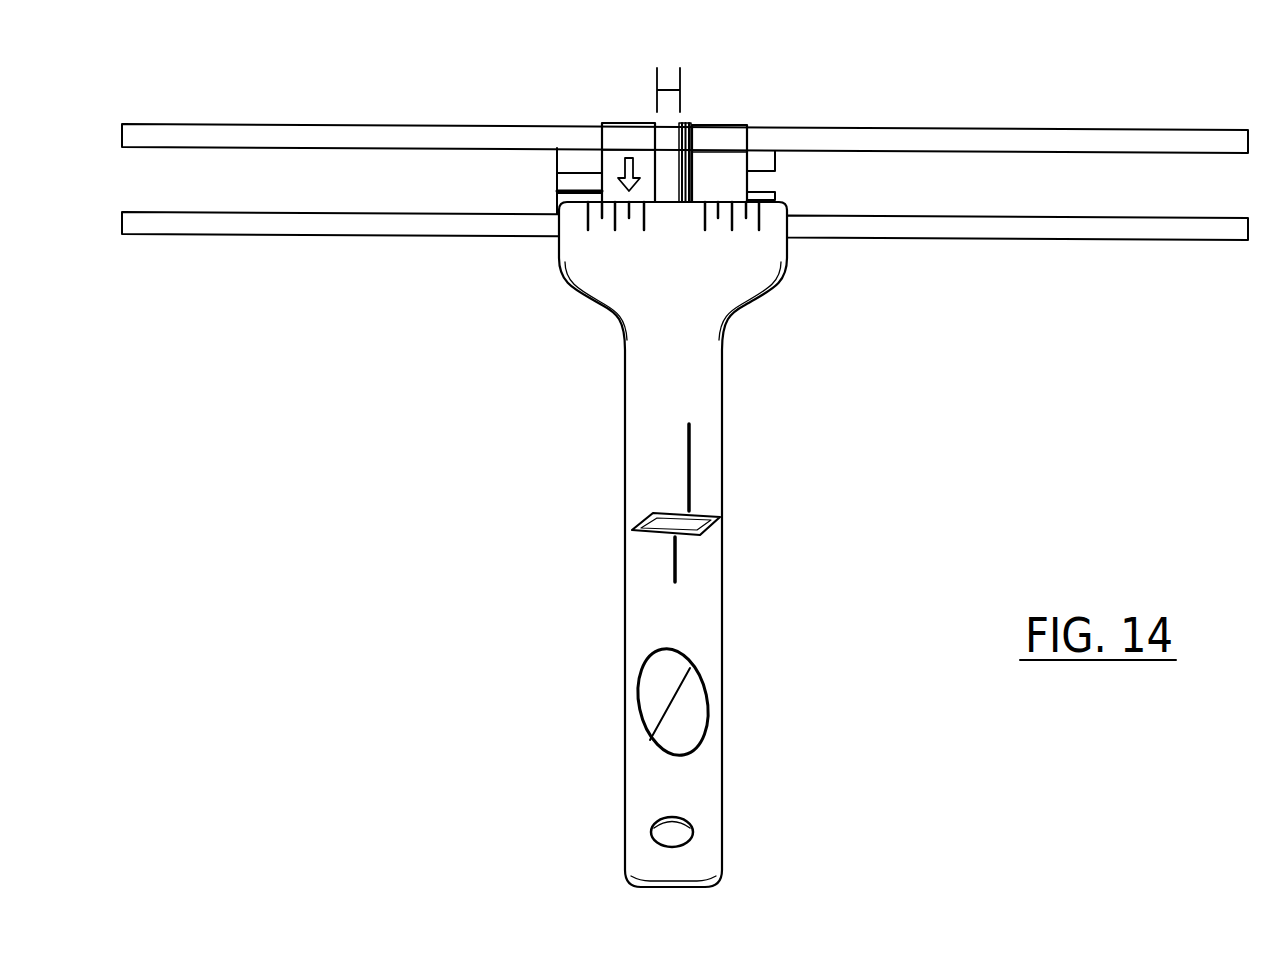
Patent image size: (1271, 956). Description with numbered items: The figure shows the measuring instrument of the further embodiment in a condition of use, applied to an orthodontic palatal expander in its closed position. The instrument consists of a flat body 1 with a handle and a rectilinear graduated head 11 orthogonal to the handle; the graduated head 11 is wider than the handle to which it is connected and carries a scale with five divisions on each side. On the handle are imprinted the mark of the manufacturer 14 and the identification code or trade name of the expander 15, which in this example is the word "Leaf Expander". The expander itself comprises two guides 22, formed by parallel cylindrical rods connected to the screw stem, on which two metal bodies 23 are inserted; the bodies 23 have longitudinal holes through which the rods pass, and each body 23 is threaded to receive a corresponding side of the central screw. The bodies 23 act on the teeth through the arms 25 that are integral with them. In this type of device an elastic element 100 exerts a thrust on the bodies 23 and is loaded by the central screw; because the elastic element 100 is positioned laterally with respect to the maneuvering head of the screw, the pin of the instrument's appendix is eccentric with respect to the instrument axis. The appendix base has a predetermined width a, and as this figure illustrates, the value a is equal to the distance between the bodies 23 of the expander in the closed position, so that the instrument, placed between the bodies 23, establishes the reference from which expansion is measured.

The flat body 1 is at (645, 443).
The graduated head 11 is at (586, 268).
The mark of the manufacturer 14 is at (710, 703).
The identification code or trade name of the expander 15 is at (702, 501).
The guides 22 is at (553, 207).
The bodies 23 is at (607, 122).
The arms 25 is at (238, 131).
The elastic element 100 is at (688, 118).
The predetermined width of the base a is at (666, 65).